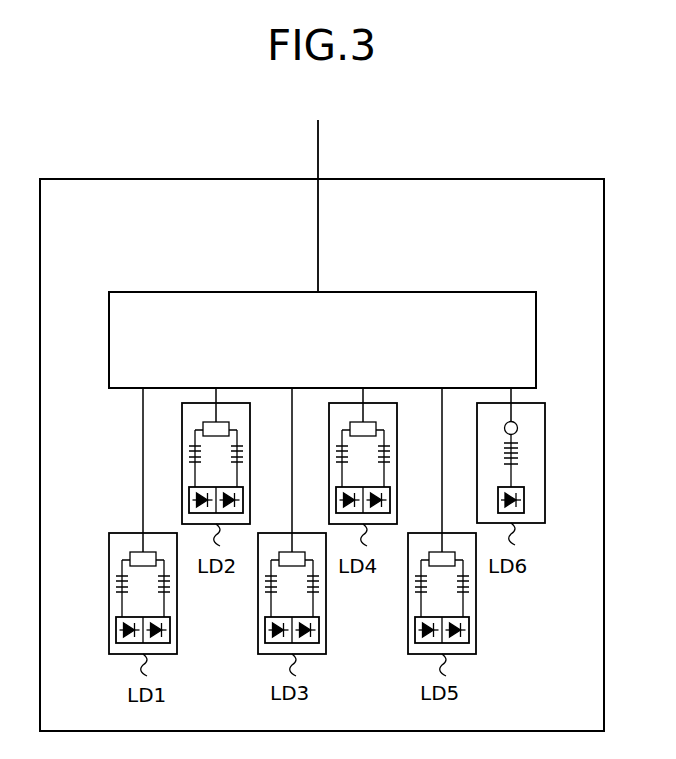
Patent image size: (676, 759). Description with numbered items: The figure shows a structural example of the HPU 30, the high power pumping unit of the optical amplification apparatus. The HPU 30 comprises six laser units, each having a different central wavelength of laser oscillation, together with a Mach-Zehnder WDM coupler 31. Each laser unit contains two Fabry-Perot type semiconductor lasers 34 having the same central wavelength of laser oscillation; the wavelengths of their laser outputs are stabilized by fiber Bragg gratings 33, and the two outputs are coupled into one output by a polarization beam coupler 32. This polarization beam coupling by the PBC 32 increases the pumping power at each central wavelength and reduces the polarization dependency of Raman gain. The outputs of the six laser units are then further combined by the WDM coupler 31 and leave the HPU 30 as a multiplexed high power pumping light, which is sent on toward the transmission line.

The HPU 30 is at (538, 179).
The Mach-Zehnder WDM coupler 31 is at (486, 292).
The polarization beam coupler 32 is at (130, 552).
The fiber Bragg gratings 33 is at (120, 585).
The Fabry-Perot type semiconductor lasers 34 is at (120, 629).